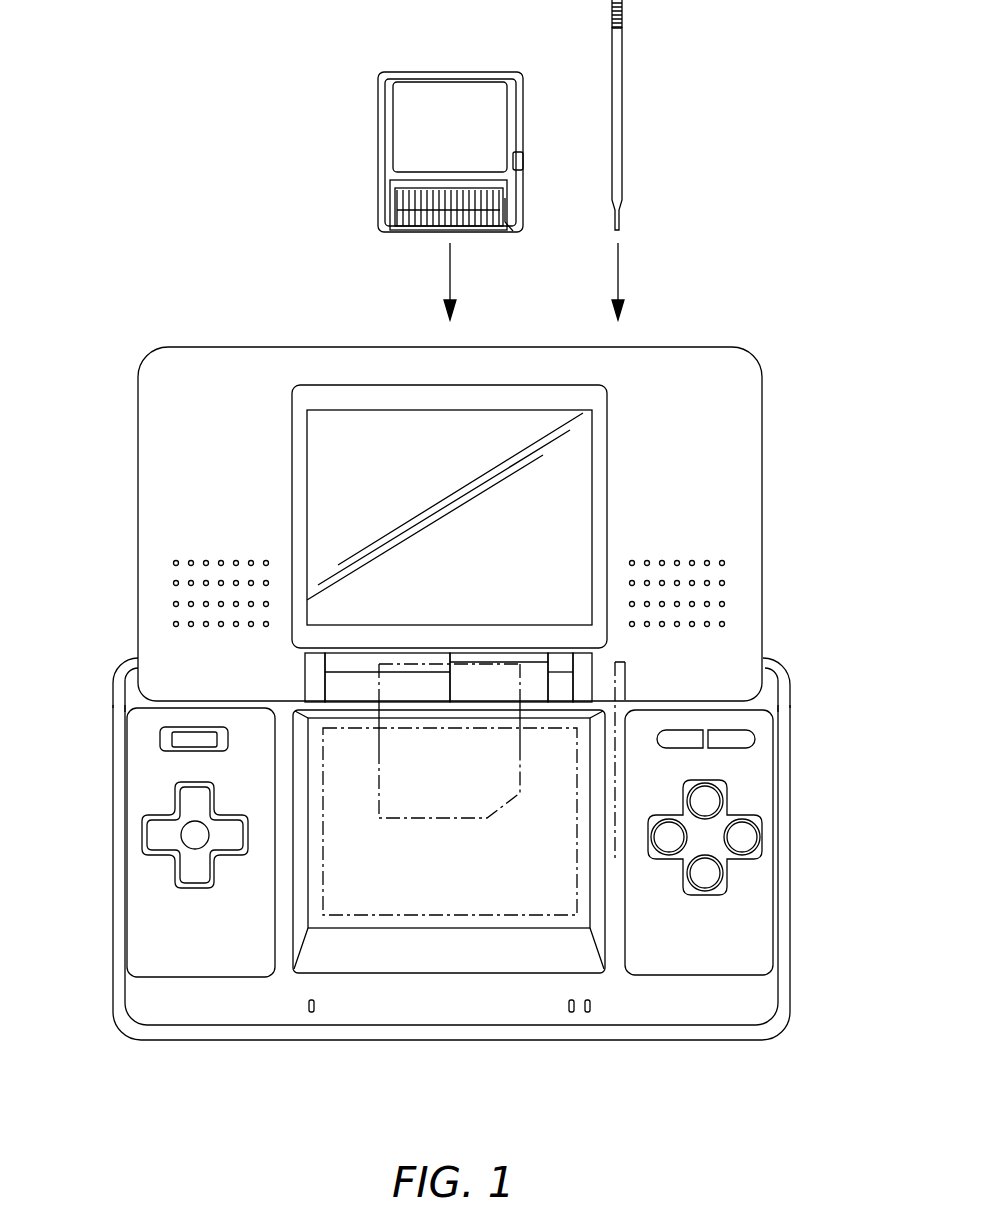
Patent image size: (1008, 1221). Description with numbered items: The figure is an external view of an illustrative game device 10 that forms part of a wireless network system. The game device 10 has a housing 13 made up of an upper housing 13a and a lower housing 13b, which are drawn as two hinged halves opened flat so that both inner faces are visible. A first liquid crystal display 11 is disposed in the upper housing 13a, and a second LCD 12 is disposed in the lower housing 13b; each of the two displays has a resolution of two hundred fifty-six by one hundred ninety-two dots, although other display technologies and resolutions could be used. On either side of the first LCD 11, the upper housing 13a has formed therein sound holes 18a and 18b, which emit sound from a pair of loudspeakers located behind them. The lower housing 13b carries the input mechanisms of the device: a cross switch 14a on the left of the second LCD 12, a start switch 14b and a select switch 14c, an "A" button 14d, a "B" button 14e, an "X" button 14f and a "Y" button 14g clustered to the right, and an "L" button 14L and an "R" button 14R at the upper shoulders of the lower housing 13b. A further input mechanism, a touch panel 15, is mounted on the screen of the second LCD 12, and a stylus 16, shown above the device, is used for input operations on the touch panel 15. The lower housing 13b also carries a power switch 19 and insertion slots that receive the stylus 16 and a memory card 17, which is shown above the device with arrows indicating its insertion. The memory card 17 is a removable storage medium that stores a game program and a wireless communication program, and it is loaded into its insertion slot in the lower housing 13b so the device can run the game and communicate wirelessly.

The game apparatus 10 is at (198, 128).
The first liquid crystal display 11 is at (347, 433).
The second LCD 12 is at (473, 930).
The housing 13 is at (740, 347).
The upper housing 13a is at (692, 455).
The lower housing 13b is at (148, 950).
The "L" button 14L is at (114, 675).
The "R" button 14R is at (782, 668).
The cross switch 14a is at (148, 835).
The start switch 14b is at (733, 742).
The select switch 14c is at (682, 737).
The "A" button 14d is at (760, 837).
The "B" button 14e is at (722, 884).
The "X" button 14f is at (727, 790).
The "Y" button 14g is at (658, 852).
The touch panel 15 is at (371, 916).
The stylus 16 is at (622, 90).
The memory card 17 is at (448, 75).
The sound hole 18a is at (176, 603).
The sound hole 18b is at (723, 563).
The power switch 19 is at (160, 737).